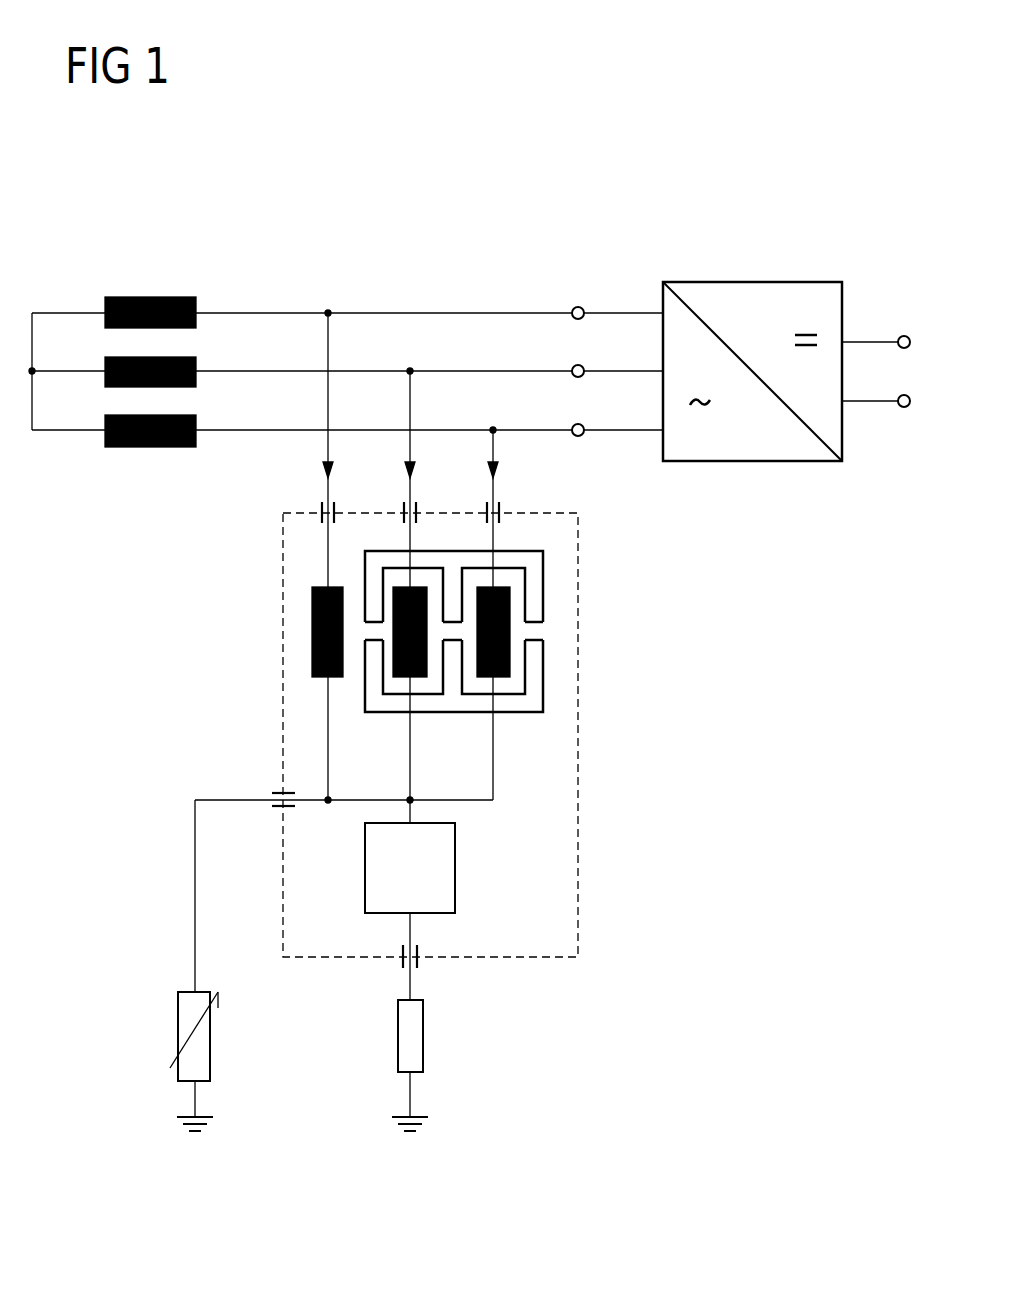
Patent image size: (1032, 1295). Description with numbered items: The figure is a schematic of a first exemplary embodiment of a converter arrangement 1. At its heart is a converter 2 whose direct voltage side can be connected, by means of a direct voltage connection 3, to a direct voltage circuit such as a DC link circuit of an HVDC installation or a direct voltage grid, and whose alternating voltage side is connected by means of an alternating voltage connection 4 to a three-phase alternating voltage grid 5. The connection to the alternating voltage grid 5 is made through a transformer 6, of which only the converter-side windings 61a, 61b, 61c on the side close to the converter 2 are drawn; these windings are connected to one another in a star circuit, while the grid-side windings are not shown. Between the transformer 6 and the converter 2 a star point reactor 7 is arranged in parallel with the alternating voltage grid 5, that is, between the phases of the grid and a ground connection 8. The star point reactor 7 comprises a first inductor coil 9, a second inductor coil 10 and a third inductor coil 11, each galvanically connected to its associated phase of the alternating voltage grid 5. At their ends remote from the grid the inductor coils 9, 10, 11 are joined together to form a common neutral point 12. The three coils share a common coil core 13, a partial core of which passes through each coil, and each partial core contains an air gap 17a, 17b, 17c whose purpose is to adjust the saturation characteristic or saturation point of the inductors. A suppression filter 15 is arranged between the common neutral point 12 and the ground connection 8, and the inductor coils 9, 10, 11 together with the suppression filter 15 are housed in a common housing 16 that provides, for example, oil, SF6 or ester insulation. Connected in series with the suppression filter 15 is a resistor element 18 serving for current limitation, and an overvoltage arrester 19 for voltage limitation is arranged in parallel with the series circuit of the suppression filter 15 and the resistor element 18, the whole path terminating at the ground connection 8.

The converter arrangement 1 is at (548, 108).
The converter 2 is at (752, 282).
The direct voltage connection 3 is at (907, 274).
The alternating voltage connection 4 is at (582, 272).
The alternating voltage grid 5 is at (270, 272).
The transformer 6 is at (55, 272).
The converter-side winding 61a is at (172, 329).
The converter-side winding 61b is at (172, 388).
The converter-side winding 61c is at (172, 447).
The star point reactor 7 is at (252, 676).
The ground connection 8 is at (445, 1138).
The first inductor coil 9 is at (312, 625).
The second inductor coil 10 is at (395, 597).
The third inductor coil 11 is at (508, 597).
The common neutral point 12 is at (413, 803).
The common coil core 13 is at (537, 676).
The suppression filter 15 is at (457, 887).
The common housing 16 is at (580, 888).
The air gap 17a is at (362, 635).
The air gap 17b is at (447, 635).
The air gap 17c is at (537, 632).
The resistor element 18 is at (425, 1037).
The overvoltage arrester 19 is at (212, 1037).